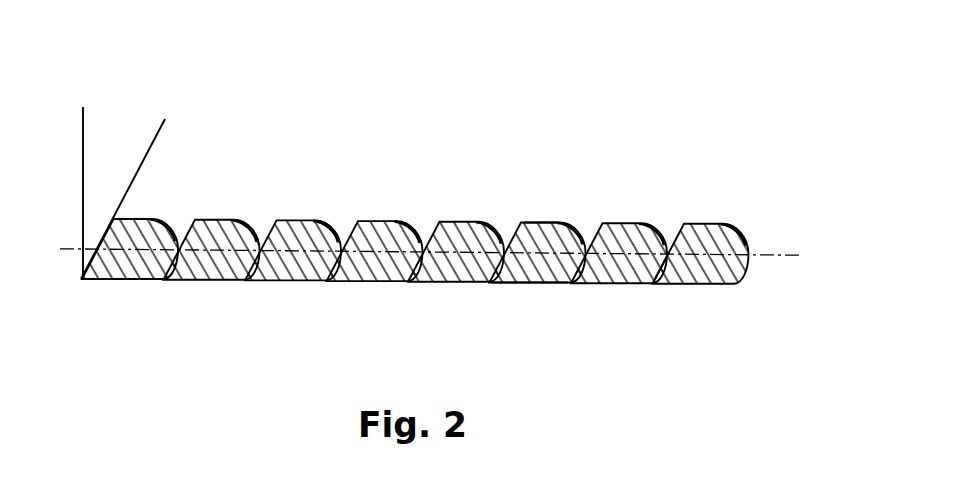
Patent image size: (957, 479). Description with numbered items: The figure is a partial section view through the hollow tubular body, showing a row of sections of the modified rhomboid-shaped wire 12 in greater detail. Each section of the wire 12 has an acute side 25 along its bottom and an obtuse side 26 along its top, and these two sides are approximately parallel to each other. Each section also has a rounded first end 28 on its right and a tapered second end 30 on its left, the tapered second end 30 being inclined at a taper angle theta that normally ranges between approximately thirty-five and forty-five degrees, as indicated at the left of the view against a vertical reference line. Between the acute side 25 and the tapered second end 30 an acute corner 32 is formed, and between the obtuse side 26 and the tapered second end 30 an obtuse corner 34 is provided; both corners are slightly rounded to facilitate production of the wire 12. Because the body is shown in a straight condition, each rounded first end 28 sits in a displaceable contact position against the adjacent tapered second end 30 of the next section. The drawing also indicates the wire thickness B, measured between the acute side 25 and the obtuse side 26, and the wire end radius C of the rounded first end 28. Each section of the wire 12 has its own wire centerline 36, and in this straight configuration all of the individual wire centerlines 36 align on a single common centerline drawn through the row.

The wire 12 is at (230, 226).
The acute side 25 is at (592, 285).
The obtuse side 26 is at (546, 221).
The rounded first end 28 is at (742, 272).
The tapered second end 30 is at (671, 251).
The acute corner 32 is at (490, 283).
The obtuse corner 34 is at (522, 222).
The wire centerline 36 is at (789, 251).
The wire thickness B is at (375, 333).
The wire end radius C is at (718, 253).
The taper angle theta is at (152, 135).